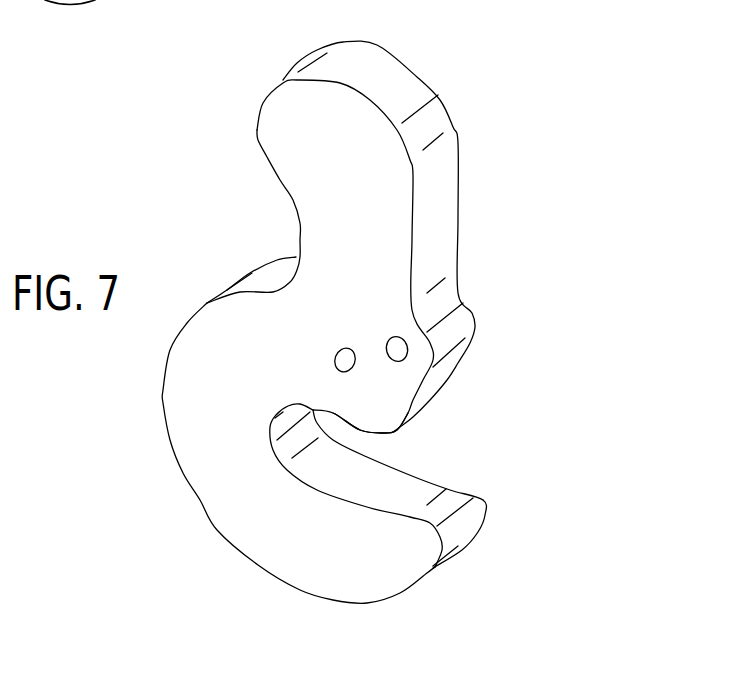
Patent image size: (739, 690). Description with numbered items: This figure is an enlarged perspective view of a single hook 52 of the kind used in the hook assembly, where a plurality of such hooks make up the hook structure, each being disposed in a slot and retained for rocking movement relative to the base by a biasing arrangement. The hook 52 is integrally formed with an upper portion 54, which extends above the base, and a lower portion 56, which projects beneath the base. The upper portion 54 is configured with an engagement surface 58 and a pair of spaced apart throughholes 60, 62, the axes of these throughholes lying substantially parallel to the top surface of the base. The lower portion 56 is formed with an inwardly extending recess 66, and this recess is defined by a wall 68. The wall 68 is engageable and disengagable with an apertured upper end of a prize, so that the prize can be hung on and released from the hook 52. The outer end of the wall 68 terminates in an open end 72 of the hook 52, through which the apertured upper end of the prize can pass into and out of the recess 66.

The hook 52 is at (476, 208).
The upper portion 54 is at (352, 118).
The lower portion 56 is at (210, 483).
The engagement surface 58 is at (257, 132).
The throughhole 60 is at (333, 367).
The throughhole 62 is at (396, 345).
The inwardly extending recess 66 is at (370, 445).
The wall 68 is at (418, 488).
The open end 72 is at (467, 518).